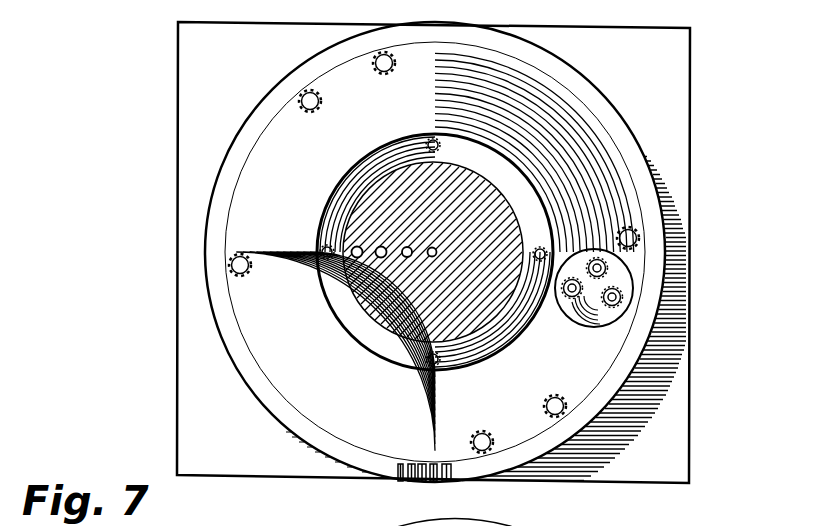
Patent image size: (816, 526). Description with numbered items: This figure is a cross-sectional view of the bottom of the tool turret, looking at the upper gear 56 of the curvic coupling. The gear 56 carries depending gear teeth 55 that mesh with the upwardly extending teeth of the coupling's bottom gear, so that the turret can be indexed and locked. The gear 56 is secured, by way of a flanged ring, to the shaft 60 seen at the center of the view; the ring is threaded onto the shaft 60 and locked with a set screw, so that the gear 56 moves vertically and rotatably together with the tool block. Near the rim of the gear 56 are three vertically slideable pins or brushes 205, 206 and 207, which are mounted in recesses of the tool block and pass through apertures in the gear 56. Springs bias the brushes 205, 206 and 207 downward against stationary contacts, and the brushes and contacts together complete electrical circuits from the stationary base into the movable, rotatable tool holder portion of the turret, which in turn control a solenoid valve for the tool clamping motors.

The upper gear 56 is at (617, 398).
The shaft 60 is at (483, 318).
The gear teeth 55 is at (443, 481).
The brush 205 is at (566, 304).
The brush 206 is at (610, 262).
The brush 207 is at (608, 310).